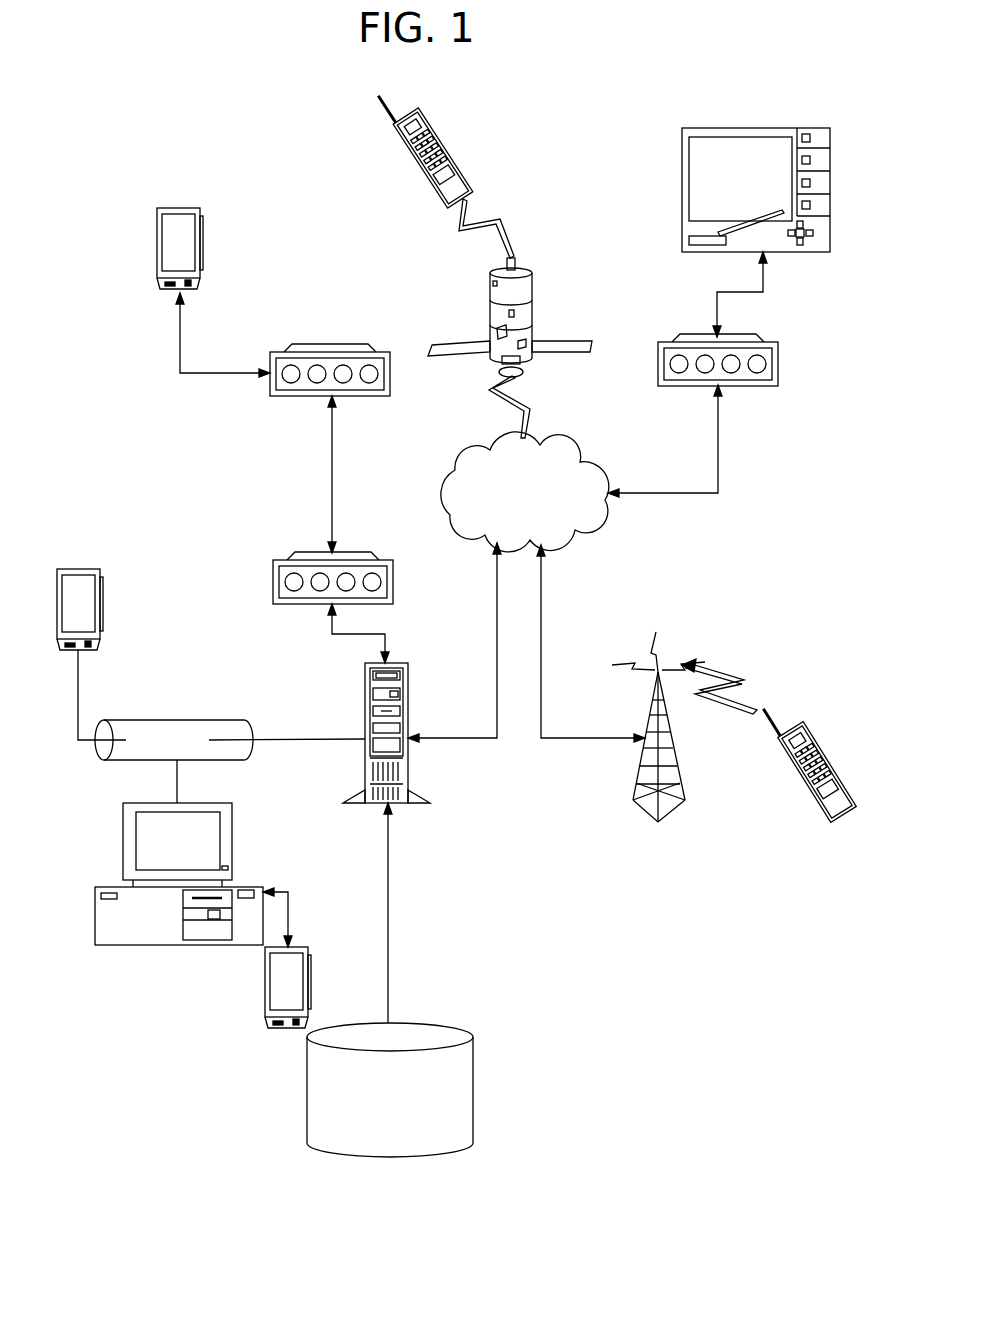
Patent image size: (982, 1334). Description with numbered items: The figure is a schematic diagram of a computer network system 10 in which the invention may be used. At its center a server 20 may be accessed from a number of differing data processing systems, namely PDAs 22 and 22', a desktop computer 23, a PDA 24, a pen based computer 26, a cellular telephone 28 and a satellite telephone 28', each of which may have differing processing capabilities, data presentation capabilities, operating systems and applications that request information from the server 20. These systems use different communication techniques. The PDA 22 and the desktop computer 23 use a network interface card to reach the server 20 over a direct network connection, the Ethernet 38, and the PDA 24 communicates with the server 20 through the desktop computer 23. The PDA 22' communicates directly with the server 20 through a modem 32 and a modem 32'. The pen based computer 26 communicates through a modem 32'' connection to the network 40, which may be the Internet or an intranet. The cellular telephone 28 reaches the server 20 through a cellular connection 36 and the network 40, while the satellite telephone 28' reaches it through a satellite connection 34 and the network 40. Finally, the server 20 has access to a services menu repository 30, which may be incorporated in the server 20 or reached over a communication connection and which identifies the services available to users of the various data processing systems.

The system 10 is at (602, 148).
The server 20 is at (407, 677).
The PDA 22 is at (87, 595).
The PDA 22' is at (191, 235).
The desktop computer 23 is at (95, 897).
The PDA 24 is at (267, 1002).
The pen based computer 26 is at (682, 178).
The cellular telephone 28 is at (769, 740).
The satellite telephone 28' is at (432, 144).
The services menu repository 30 is at (472, 1057).
The modem 32 is at (330, 356).
The modem 32' is at (339, 564).
The modem 32'' is at (728, 348).
The satellite connection 34 is at (533, 297).
The cellular connection 36 is at (633, 800).
The Ethernet 38 is at (165, 720).
The network 40 is at (572, 450).